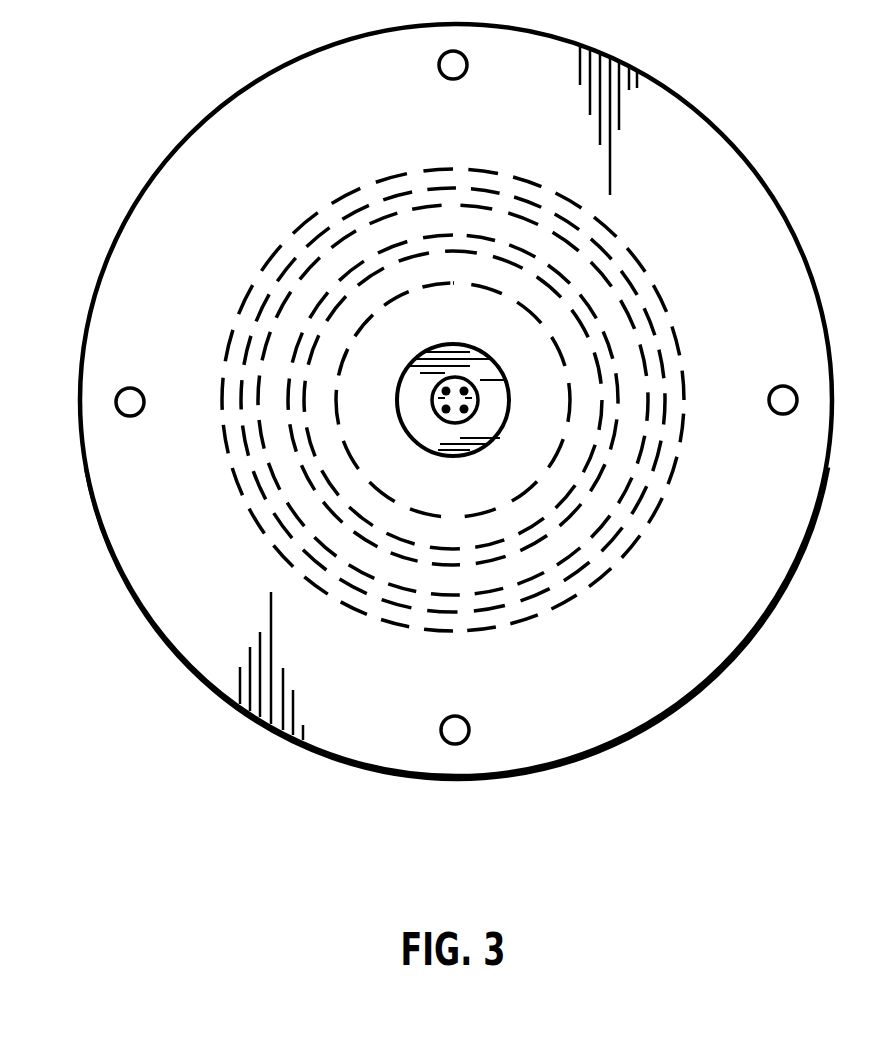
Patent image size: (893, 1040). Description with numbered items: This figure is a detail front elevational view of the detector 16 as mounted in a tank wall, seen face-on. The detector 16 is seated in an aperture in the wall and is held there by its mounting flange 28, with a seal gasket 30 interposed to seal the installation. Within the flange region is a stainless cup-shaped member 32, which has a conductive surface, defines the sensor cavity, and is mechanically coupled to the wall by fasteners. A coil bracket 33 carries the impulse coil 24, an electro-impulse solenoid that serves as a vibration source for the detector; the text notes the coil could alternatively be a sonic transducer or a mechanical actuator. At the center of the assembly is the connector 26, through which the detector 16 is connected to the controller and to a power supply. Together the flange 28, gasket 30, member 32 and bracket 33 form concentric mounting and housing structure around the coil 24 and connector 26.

The detector 16 is at (84, 275).
The impulse coil 24 is at (537, 380).
The connector 26 is at (470, 458).
The mounting flange 28 is at (349, 200).
The seal gasket 30 is at (464, 195).
The cup-shaped member 32 is at (533, 218).
The coil bracket 33 is at (545, 290).